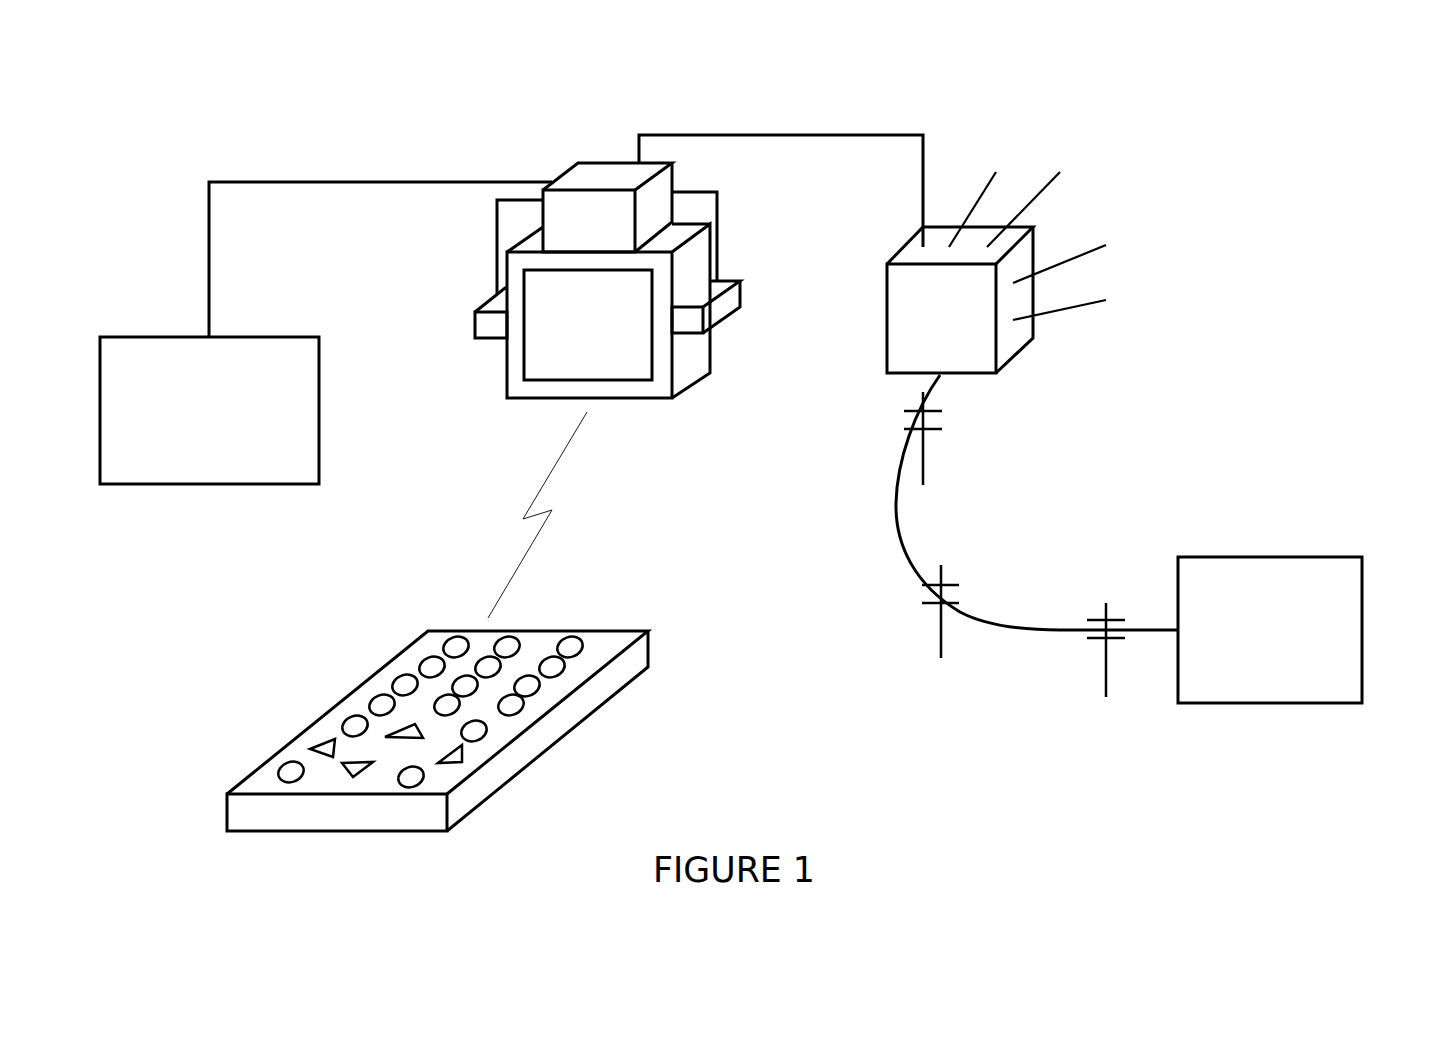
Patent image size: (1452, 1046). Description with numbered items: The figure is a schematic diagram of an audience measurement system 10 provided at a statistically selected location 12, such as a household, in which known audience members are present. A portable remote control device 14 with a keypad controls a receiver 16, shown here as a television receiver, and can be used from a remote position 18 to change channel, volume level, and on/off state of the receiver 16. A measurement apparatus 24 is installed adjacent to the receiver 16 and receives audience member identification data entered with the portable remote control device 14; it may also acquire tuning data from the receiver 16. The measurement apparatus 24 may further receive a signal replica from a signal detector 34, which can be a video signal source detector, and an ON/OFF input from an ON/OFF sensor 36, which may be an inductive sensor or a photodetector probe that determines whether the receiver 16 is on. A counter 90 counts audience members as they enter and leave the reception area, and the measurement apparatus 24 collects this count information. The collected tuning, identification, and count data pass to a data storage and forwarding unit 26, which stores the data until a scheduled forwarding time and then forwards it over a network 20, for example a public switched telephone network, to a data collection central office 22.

The audience measurement system 10 is at (1221, 167).
The statistically selected location 12 is at (1188, 406).
The portable remote control device 14 is at (588, 683).
The receiver 16 is at (683, 373).
The remote position 18 is at (716, 788).
The network 20 is at (897, 505).
The data collection central office 22 is at (1362, 557).
The measurement apparatus 24 is at (593, 173).
The data storage and forwarding unit 26 is at (1013, 337).
The signal detector 34 is at (473, 327).
The ON/OFF sensor 36 is at (728, 300).
The counter 90 is at (318, 337).